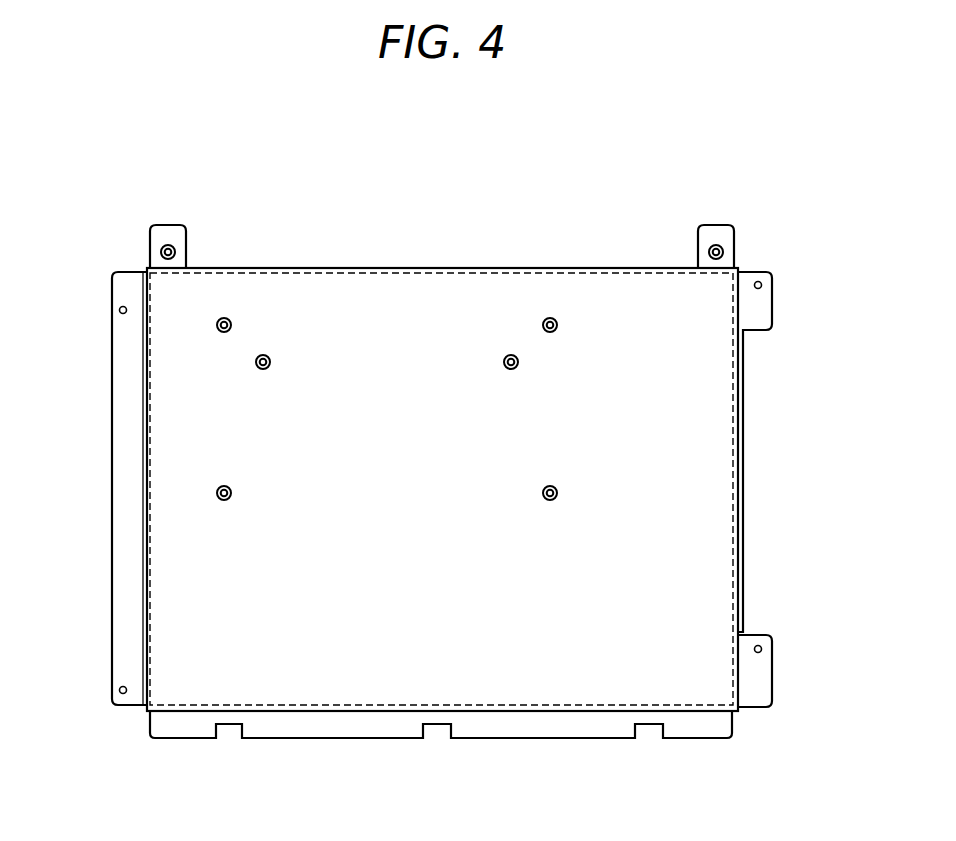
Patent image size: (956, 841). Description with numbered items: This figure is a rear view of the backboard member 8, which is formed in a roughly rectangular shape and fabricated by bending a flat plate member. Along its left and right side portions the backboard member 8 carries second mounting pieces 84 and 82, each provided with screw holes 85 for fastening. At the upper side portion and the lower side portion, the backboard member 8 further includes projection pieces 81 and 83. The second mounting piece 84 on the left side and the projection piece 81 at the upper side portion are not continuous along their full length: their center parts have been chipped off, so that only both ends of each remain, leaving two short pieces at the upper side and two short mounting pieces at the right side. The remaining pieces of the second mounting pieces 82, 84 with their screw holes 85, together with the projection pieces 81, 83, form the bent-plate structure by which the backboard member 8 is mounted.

The backboard member 8 is at (500, 262).
The projection piece 81 is at (175, 236).
The second mounting piece 82 is at (762, 312).
The projection piece 83 is at (383, 740).
The second mounting piece 84 is at (123, 516).
The screw hole 85 is at (119, 310).